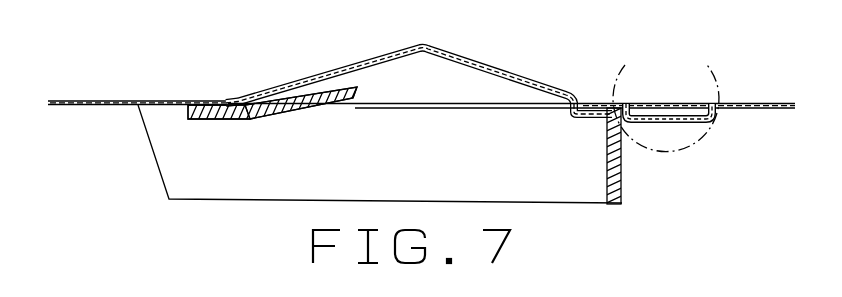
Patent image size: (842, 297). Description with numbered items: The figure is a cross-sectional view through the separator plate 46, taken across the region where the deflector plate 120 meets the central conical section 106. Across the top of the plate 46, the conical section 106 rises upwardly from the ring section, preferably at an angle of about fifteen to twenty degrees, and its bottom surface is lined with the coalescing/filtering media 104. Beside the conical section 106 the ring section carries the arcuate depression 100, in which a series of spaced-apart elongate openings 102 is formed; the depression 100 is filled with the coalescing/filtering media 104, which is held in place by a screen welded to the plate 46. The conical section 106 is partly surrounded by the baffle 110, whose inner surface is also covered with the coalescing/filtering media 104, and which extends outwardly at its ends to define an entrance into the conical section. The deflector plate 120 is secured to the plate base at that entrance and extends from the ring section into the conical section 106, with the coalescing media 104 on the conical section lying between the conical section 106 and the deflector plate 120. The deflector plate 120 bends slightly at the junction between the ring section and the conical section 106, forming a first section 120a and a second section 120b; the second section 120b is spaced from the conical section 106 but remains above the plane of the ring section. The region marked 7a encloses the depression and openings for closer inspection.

The plate 46 is at (582, 68).
The detail region 7a is at (666, 96).
The arcuate depression 100 is at (712, 120).
The elongate openings 102 is at (655, 120).
The coalescing/filtering media 104 is at (481, 105).
The central conical section 106 is at (483, 103).
The baffle 110 is at (157, 162).
The deflector plate 120 is at (346, 99).
The first section 120a is at (188, 120).
The second section 120b is at (300, 108).